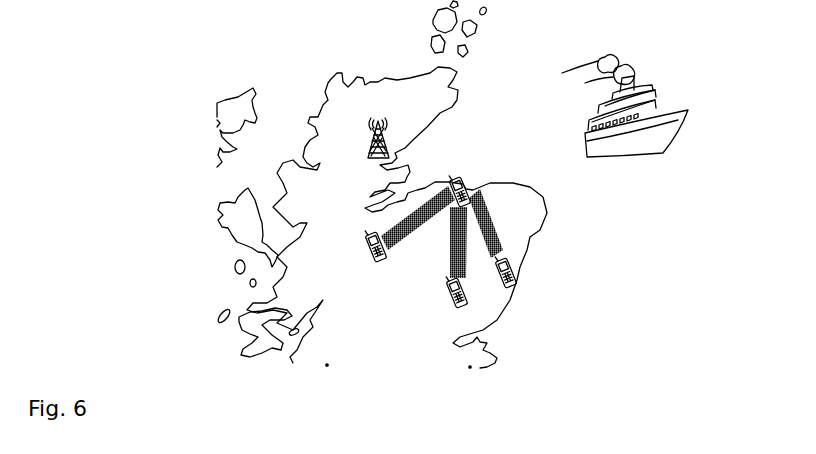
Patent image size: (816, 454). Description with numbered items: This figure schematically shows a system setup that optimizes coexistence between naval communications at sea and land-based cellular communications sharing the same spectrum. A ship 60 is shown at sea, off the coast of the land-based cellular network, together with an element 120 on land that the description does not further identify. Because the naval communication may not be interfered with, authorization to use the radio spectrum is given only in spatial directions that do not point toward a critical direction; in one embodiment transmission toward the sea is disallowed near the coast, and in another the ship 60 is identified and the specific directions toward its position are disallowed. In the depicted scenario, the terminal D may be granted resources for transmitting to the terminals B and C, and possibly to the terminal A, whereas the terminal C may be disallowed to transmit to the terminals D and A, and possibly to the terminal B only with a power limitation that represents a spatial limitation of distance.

The base station tower 120 is at (355, 120).
The ship 60 is at (647, 177).
The terminal A is at (516, 270).
The terminal B is at (452, 297).
The terminal C is at (374, 257).
The terminal D is at (467, 179).